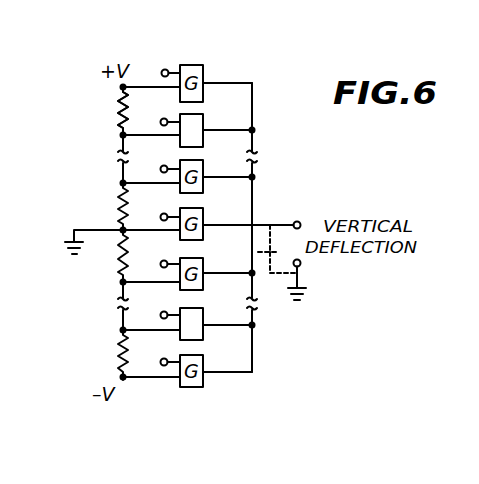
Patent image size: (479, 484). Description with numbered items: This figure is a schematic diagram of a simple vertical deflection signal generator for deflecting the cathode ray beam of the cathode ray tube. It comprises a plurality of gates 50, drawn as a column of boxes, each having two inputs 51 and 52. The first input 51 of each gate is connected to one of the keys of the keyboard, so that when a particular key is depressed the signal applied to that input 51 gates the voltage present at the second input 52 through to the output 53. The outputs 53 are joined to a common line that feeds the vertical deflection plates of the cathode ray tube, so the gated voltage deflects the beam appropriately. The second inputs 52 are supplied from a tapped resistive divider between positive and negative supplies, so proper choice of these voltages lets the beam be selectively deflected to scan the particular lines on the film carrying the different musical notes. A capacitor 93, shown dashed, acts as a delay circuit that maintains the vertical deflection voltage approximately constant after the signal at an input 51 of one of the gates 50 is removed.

The gate 50 is at (204, 129).
The first input 51 is at (171, 57).
The second input 52 is at (138, 88).
The output 53 is at (254, 104).
The capacitor 93 is at (258, 252).